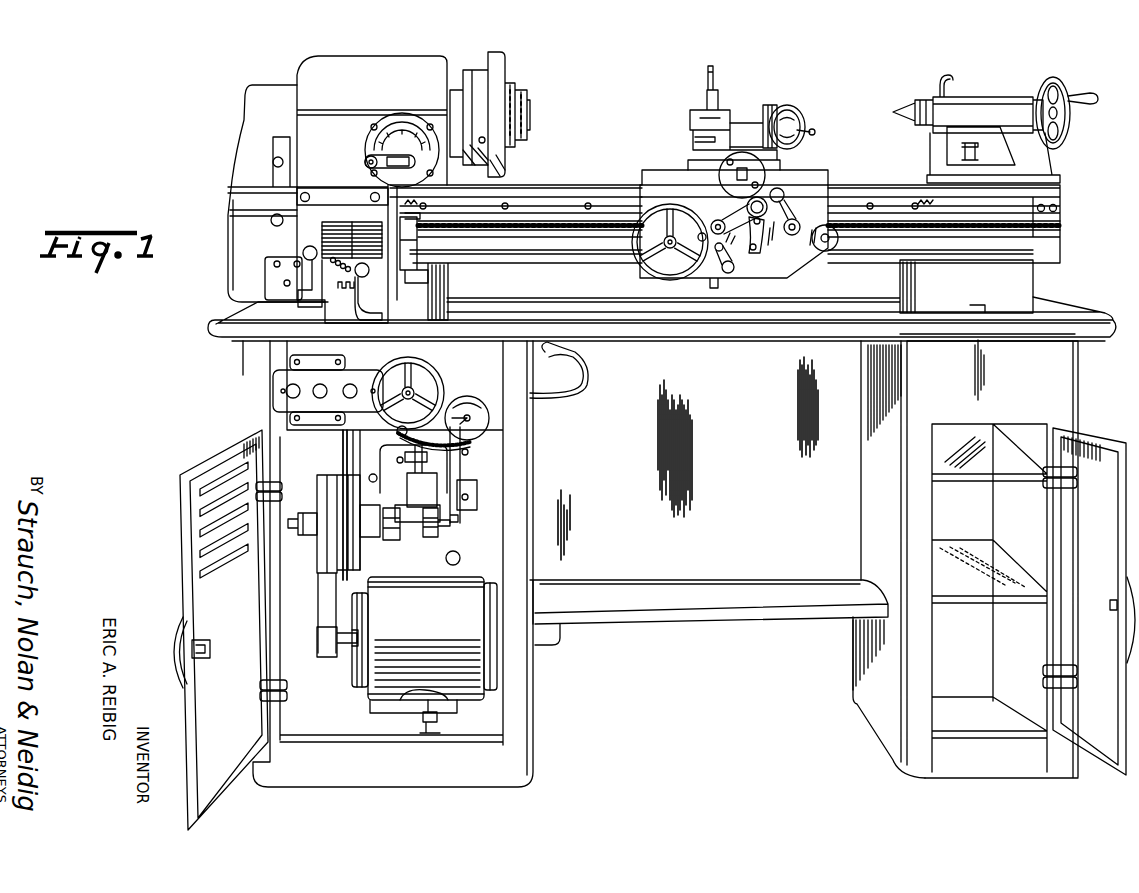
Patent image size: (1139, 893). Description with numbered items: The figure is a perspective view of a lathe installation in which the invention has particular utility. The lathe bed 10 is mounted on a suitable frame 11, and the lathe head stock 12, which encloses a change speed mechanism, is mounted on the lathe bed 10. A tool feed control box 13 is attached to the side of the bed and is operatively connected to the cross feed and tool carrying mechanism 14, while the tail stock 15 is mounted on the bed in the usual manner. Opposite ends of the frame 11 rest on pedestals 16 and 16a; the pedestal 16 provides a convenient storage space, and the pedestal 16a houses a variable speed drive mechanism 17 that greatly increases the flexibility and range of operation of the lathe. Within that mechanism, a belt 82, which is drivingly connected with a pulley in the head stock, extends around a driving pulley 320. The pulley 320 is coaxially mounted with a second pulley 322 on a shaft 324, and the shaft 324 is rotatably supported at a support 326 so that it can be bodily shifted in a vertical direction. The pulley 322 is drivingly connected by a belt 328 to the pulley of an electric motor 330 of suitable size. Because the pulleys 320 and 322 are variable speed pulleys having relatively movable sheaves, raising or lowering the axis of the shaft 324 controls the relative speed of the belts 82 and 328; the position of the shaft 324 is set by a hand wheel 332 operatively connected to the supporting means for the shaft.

The lathe bed 10 is at (577, 263).
The frame 11 is at (683, 341).
The lathe head stock 12 is at (312, 72).
The tool feed control box 13 is at (410, 249).
The cross feed and tool carrying mechanism 14 is at (805, 160).
The tail stock 15 is at (997, 93).
The pedestal 16 is at (872, 483).
The pedestal 16a is at (530, 495).
The variable speed drive mechanism 17 is at (422, 550).
The belt 82 is at (344, 434).
The driving pulley 320 is at (392, 550).
The second pulley 322 is at (313, 491).
The shaft 324 is at (310, 536).
The rotatable support 326 is at (441, 524).
The belt 328 is at (322, 609).
The electric motor 330 is at (357, 678).
The hand wheel 332 is at (432, 360).